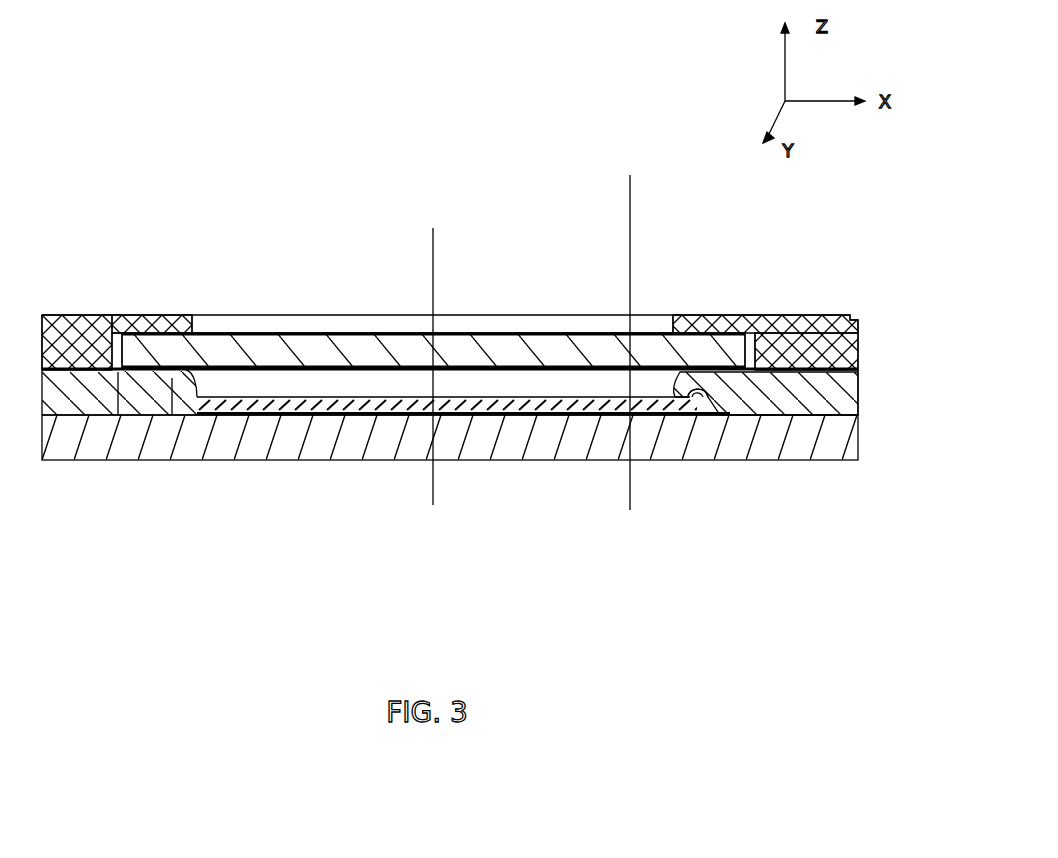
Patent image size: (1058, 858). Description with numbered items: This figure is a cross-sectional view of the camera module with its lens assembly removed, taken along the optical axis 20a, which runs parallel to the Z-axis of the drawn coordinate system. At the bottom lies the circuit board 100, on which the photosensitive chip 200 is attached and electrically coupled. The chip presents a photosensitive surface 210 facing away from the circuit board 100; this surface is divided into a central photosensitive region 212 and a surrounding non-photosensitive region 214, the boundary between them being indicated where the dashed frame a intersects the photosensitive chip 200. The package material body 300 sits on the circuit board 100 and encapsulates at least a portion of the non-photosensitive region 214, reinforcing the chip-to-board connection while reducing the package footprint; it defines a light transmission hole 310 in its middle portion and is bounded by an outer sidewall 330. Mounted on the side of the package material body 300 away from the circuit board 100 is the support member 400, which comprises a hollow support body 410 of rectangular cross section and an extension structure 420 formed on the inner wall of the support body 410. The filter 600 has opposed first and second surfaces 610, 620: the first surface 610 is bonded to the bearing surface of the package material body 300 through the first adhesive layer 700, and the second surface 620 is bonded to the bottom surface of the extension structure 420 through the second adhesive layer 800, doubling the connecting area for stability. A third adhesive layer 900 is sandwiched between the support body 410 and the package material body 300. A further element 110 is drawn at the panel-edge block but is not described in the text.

The circuit board 100 is at (403, 403).
The panel edge block 110 is at (165, 385).
The photosensitive chip 200 is at (501, 371).
The photosensitive surface 210 is at (464, 463).
The photosensitive region 212 is at (600, 405).
The non-photosensitive region 214 is at (692, 395).
The package material body 300 is at (469, 303).
The light transmission hole 310 is at (480, 388).
The outer sidewall 330 is at (858, 400).
The support member 400 is at (117, 292).
The support body 410 is at (76, 315).
The extension structure 420 is at (152, 293).
The filter 600 is at (433, 364).
The first surface 610 is at (575, 368).
The second surface 620 is at (530, 336).
The first adhesive layer 700 is at (692, 372).
The second adhesive layer 800 is at (735, 315).
The third adhesive layer 900 is at (793, 360).
The optical axis 20a is at (433, 262).
The dashed frame a is at (628, 331).